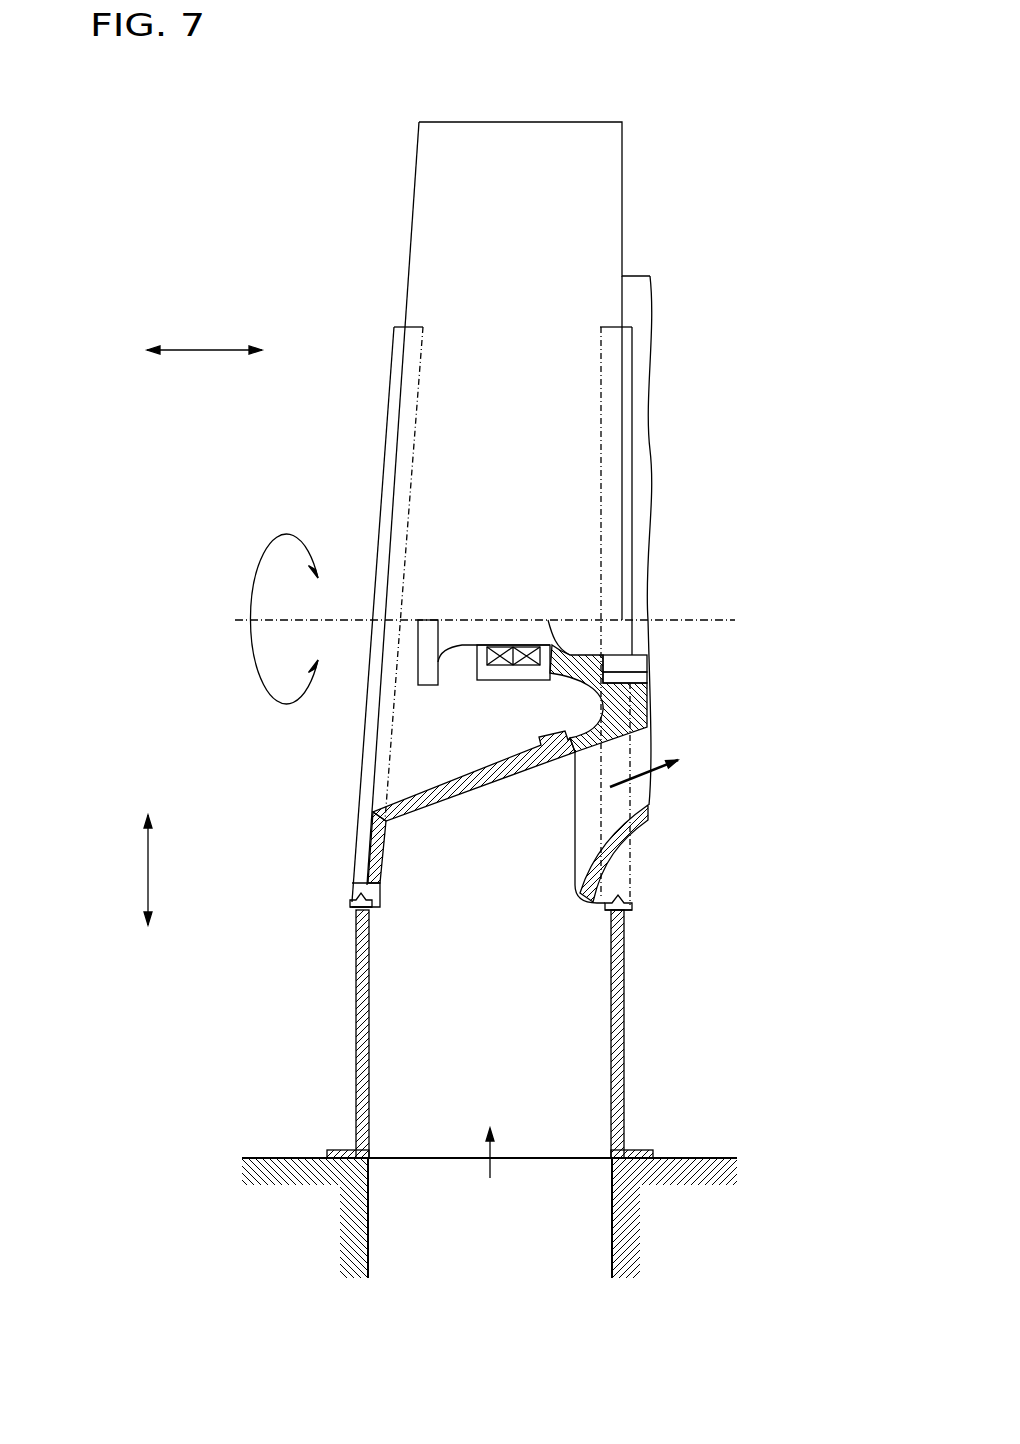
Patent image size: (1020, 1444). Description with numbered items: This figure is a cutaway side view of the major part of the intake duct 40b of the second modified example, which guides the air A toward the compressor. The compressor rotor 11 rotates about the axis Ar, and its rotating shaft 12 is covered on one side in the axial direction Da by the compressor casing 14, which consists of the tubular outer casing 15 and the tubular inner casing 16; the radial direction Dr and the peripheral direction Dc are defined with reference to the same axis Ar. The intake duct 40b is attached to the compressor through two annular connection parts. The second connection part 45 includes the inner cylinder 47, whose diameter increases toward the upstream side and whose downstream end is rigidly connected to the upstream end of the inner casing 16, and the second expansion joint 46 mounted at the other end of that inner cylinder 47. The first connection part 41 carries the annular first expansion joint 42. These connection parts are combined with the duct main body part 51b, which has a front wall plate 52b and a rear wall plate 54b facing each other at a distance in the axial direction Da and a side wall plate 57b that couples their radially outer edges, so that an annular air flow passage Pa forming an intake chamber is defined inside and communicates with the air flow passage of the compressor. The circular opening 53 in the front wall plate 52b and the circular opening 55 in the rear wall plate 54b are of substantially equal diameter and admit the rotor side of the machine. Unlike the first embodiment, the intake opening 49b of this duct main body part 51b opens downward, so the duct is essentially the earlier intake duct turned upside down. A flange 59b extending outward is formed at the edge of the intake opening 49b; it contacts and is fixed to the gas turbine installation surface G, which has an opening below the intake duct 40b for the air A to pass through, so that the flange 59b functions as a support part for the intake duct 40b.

The intake duct 40b is at (660, 120).
The compressor rotor 11 is at (463, 626).
The rotating shaft 12 is at (463, 626).
The axis Ar is at (713, 622).
The axial direction Da is at (200, 354).
The peripheral direction Dc is at (252, 655).
The radial direction Dr is at (148, 870).
The compressor casing 14 is at (697, 775).
The outer casing 15 is at (637, 827).
The inner casing 16 is at (638, 703).
The second connection part 45 is at (391, 819).
The inner cylinder 47 is at (405, 797).
The second expansion joint 46 is at (324, 859).
The opening 53 is at (362, 912).
The first connection part 41 is at (616, 912).
The first expansion joint 42 is at (625, 906).
The air flow passage Pa is at (465, 935).
The duct main body part 51b is at (412, 1034).
The front wall plate 52b is at (358, 1047).
The rear wall plate 54b is at (610, 1003).
The side wall plate 57b is at (438, 1085).
The opening 55 is at (612, 950).
The flange 59b is at (636, 1150).
The gas turbine installation surface G is at (710, 1158).
The intake opening 49b is at (528, 1158).
The air A is at (642, 775).